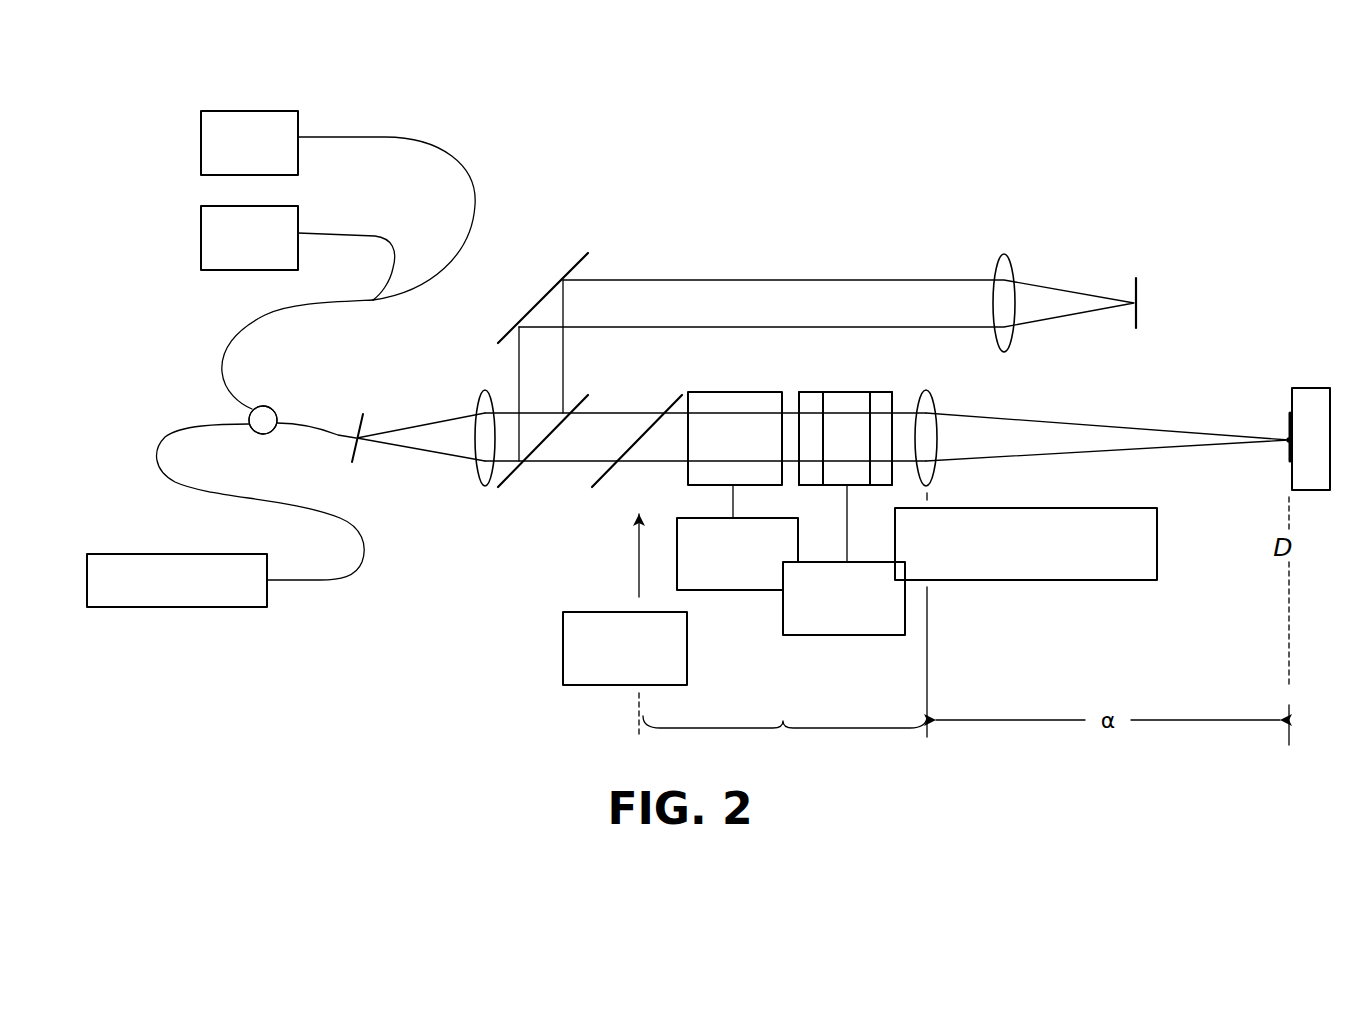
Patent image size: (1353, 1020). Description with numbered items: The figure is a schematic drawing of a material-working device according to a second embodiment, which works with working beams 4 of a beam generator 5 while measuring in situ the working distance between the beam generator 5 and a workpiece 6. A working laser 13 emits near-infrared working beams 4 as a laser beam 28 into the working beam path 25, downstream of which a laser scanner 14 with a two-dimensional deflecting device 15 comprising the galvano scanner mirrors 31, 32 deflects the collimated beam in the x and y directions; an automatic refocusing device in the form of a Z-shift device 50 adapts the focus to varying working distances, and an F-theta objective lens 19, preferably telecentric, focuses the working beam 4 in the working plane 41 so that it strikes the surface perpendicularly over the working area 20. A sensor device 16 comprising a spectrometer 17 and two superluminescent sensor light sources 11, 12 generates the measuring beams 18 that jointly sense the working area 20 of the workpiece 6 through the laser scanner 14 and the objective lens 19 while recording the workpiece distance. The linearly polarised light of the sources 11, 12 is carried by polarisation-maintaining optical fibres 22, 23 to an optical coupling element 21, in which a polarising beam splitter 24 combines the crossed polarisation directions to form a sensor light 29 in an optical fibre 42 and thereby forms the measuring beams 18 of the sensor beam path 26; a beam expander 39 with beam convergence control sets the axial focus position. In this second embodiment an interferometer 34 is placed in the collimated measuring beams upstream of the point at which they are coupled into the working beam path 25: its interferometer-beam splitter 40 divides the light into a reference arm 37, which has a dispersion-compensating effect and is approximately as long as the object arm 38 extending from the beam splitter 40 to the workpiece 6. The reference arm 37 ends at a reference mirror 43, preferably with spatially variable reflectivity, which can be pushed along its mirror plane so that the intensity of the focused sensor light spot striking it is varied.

The working beam 4 is at (1075, 420).
The beam generator 5 is at (785, 738).
The workpiece 6 is at (1285, 447).
The sensor light source 11 is at (287, 228).
The sensor light source 12 is at (283, 123).
The working laser 13 is at (563, 652).
The laser scanner 14 is at (845, 635).
The two-dimensional deflecting device 15 is at (848, 386).
The sensor device 16 is at (411, 321).
The spectrometer 17 is at (190, 556).
The measuring beams 18 is at (423, 455).
The objective lens 19 is at (1060, 580).
The working area 20 is at (1281, 466).
The optical coupling element 21 is at (260, 434).
The polarisation-maintaining optical fibre 22 is at (393, 137).
The polarisation-maintaining optical fibre 23 is at (383, 242).
The polarising beam splitter 24 is at (269, 404).
The working beam path 25 is at (788, 463).
The sensor beam path 26 is at (411, 428).
The laser beam 28 is at (637, 550).
The sensor light 29 is at (318, 422).
The scanner mirror 31 is at (815, 395).
The scanner mirror 32 is at (880, 395).
The interferometer 34 is at (598, 338).
The reference arm 37 is at (906, 274).
The object arm 38 is at (971, 404).
The beam expander 39 is at (496, 490).
The interferometer-beam splitter 40 is at (545, 445).
The working plane 41 is at (1276, 404).
The optical fibre 42 is at (315, 436).
The reference mirror 43 is at (1140, 318).
The Z-shift device 50 is at (760, 590).